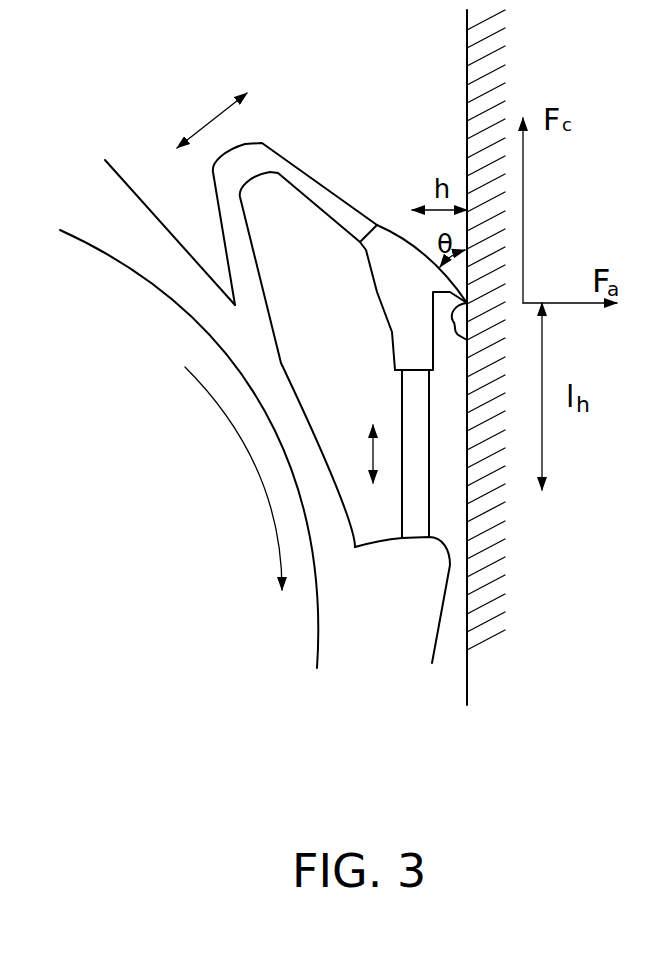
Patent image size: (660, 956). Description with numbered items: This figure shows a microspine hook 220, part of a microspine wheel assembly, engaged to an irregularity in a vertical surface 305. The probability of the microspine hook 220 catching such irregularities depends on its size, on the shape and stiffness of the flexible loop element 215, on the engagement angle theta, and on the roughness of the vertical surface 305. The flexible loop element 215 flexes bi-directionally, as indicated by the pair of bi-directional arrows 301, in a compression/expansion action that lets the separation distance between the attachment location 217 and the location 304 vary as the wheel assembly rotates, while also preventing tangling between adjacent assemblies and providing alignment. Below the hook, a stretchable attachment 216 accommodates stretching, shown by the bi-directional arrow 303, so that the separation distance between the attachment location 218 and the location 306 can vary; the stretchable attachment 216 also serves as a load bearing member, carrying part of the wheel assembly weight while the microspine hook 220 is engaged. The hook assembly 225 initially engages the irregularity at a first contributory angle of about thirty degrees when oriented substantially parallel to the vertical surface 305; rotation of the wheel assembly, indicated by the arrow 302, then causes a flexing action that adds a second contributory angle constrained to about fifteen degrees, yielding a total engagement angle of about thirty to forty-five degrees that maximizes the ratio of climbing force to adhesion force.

The bi-directional arrows 301 is at (220, 118).
The flexible loop element 215 is at (288, 160).
The attachment location 217 is at (224, 282).
The location 304 is at (378, 211).
The hook assembly 225 is at (377, 292).
The microspine hook 220 is at (463, 296).
The location 306 is at (389, 370).
The stretchable attachment 216 is at (398, 407).
The bi-directional arrow 303 is at (370, 457).
The attachment location 218 is at (397, 536).
The arrow 302 is at (235, 430).
The vertical surface 305 is at (467, 678).